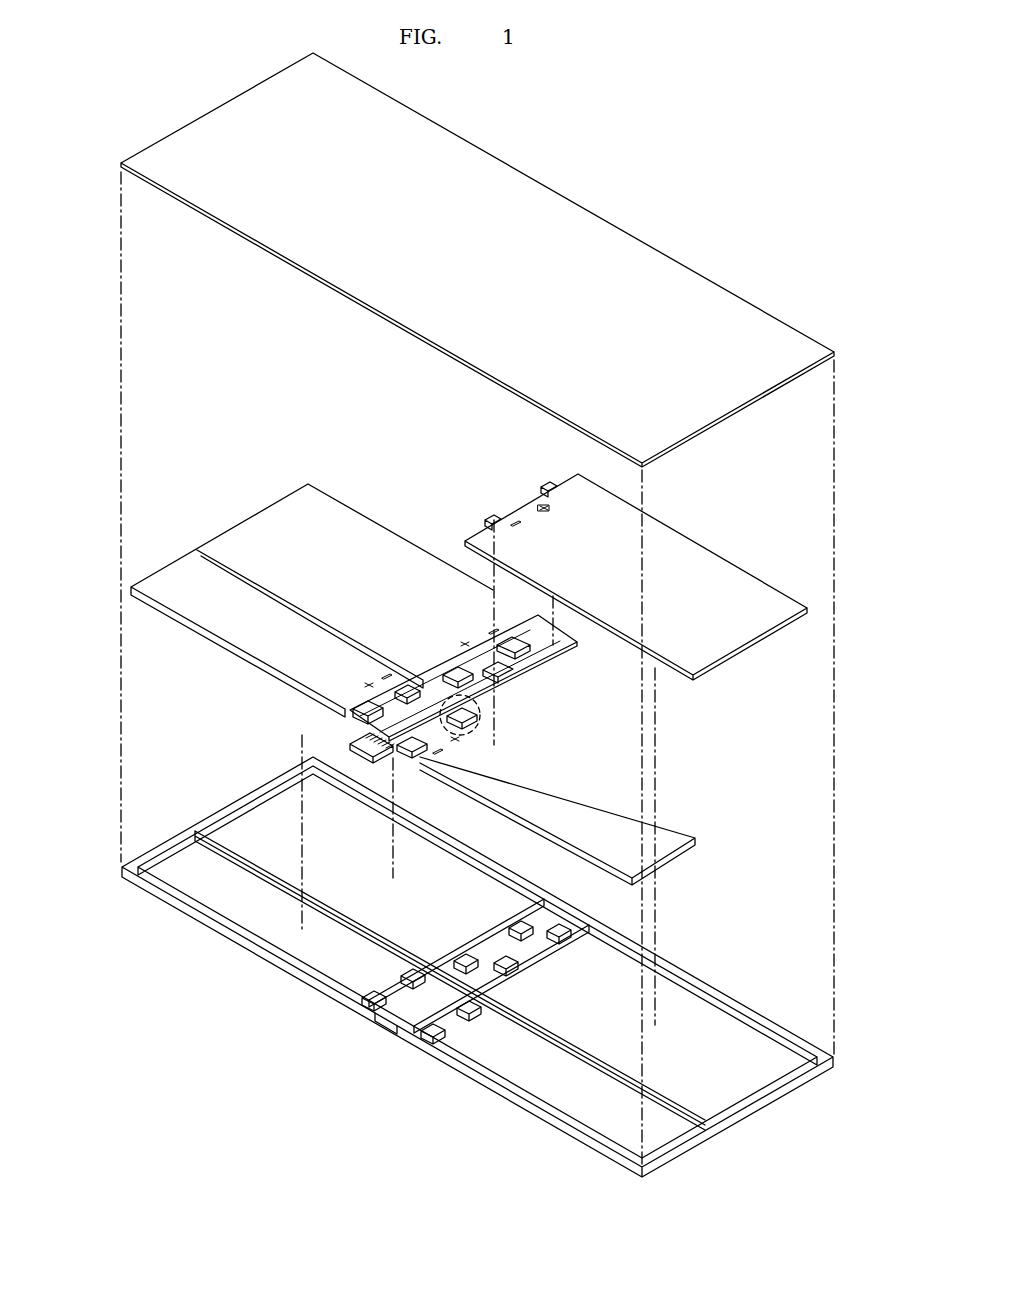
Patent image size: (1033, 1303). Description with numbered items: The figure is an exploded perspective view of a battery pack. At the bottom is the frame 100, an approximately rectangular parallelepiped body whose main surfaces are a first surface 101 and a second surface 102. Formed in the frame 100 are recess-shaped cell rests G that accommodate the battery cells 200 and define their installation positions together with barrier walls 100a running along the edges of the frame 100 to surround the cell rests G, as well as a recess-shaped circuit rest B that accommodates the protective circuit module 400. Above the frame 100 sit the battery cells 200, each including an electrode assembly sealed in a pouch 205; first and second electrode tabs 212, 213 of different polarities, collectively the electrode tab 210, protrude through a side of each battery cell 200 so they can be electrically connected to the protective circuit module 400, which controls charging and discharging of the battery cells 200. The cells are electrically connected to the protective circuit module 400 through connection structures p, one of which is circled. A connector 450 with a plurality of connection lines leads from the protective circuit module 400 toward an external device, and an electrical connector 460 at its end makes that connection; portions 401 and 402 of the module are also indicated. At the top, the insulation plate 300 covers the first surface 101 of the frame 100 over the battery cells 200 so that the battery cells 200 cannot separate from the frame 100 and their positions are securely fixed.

The frame 100 is at (475, 967).
The barrier wall 100a is at (194, 830).
The first surface 101 is at (770, 1052).
The second surface 102 is at (815, 1075).
The battery cell 200 is at (180, 578).
The pouch 205 is at (778, 606).
The electrode tab 210 is at (498, 472).
The first electrode tab 212 is at (547, 484).
The second electrode tab 213 is at (473, 500).
The insulation plate 300 is at (180, 145).
The protective circuit module 400 is at (407, 689).
The connector block 401 is at (481, 713).
The board end portion 402 is at (566, 660).
The connector 450 is at (362, 727).
The electrical connector 460 is at (355, 745).
The connection structure p is at (488, 730).
The cell rest G is at (297, 943).
The circuit rest B is at (398, 1007).